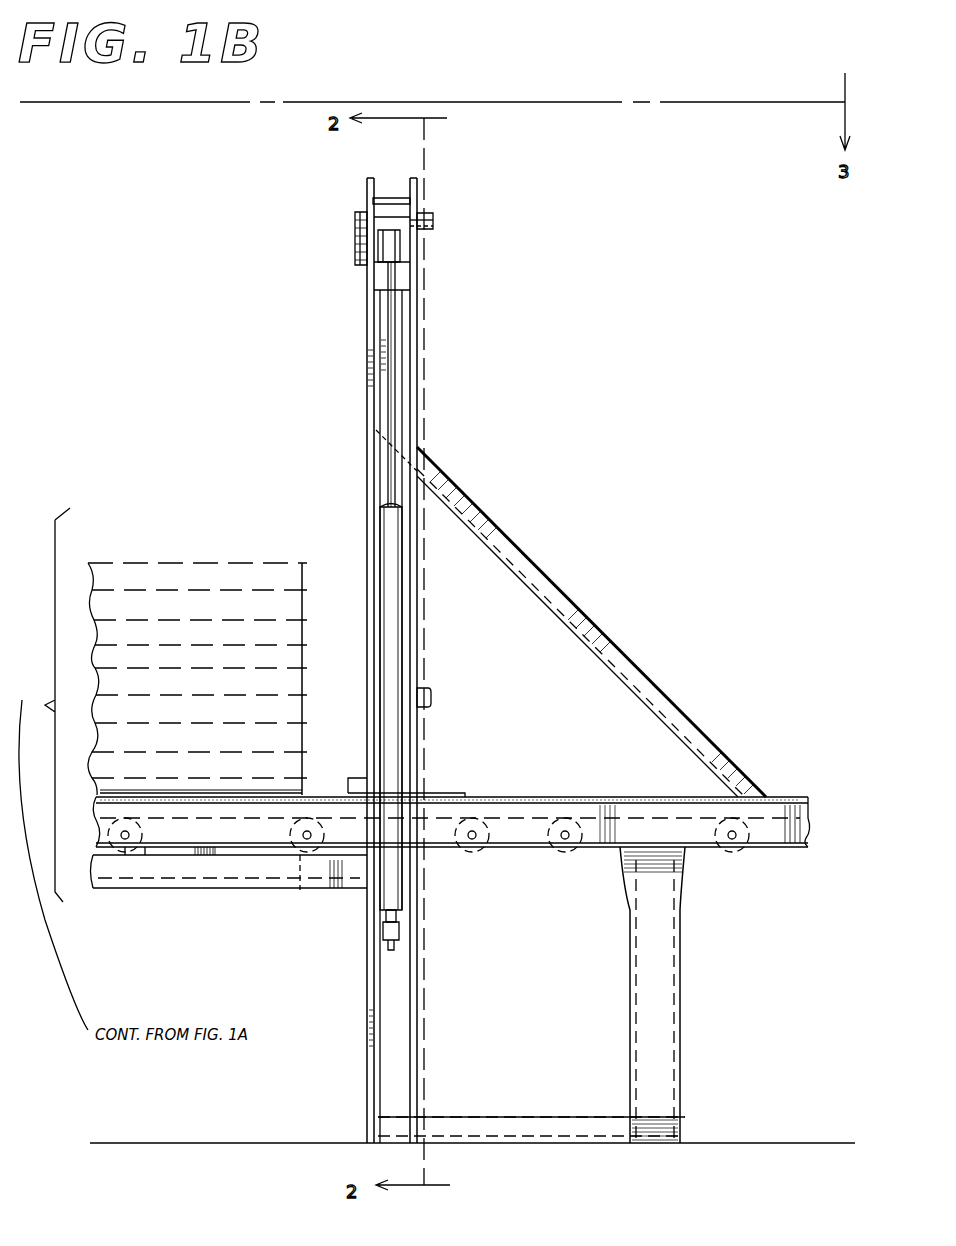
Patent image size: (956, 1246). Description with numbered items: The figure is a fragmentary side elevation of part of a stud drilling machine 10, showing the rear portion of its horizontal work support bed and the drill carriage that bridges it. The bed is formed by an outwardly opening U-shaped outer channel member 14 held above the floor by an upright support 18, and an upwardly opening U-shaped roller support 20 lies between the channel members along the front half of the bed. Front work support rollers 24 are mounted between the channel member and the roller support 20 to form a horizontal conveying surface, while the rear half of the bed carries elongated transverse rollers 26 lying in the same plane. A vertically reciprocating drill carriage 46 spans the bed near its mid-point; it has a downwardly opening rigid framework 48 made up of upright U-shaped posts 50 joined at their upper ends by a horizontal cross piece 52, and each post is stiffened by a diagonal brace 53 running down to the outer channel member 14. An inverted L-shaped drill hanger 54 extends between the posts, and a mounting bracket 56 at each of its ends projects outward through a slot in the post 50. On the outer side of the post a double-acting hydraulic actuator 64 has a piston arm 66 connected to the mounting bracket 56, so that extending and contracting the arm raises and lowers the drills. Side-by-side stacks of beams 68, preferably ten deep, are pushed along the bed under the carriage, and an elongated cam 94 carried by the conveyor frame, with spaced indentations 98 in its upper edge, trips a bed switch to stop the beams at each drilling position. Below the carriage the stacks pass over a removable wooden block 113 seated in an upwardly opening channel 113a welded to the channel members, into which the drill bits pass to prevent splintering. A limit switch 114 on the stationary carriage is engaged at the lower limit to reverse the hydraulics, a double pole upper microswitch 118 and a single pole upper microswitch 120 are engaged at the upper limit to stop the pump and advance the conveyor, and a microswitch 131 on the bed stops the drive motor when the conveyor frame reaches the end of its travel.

The stud drilling machine 10 is at (222, 515).
The outer channel member 14 is at (790, 862).
The upright support 18 is at (664, 1000).
The roller support 20 is at (200, 862).
The front work support roller 24 is at (126, 893).
The transverse roller 26 is at (492, 858).
The drill carriage 46 is at (336, 230).
The rigid framework 48 is at (354, 392).
The post 50 is at (413, 412).
The cross piece 52 is at (386, 198).
The brace 53 is at (606, 640).
The drill hanger 54 is at (415, 216).
The mounting bracket 56 is at (401, 241).
The hydraulic actuator 64 is at (380, 633).
The piston arm 66 is at (395, 372).
The beam 68 is at (160, 575).
The cam 94 is at (126, 795).
The indentation 98 is at (270, 795).
The wooden block 113 is at (334, 897).
The channel 113a is at (448, 795).
The limit switch 114 is at (430, 690).
The double pole upper microswitch 118 is at (433, 225).
The single pole upper microswitch 120 is at (433, 218).
The microswitch 131 is at (356, 782).